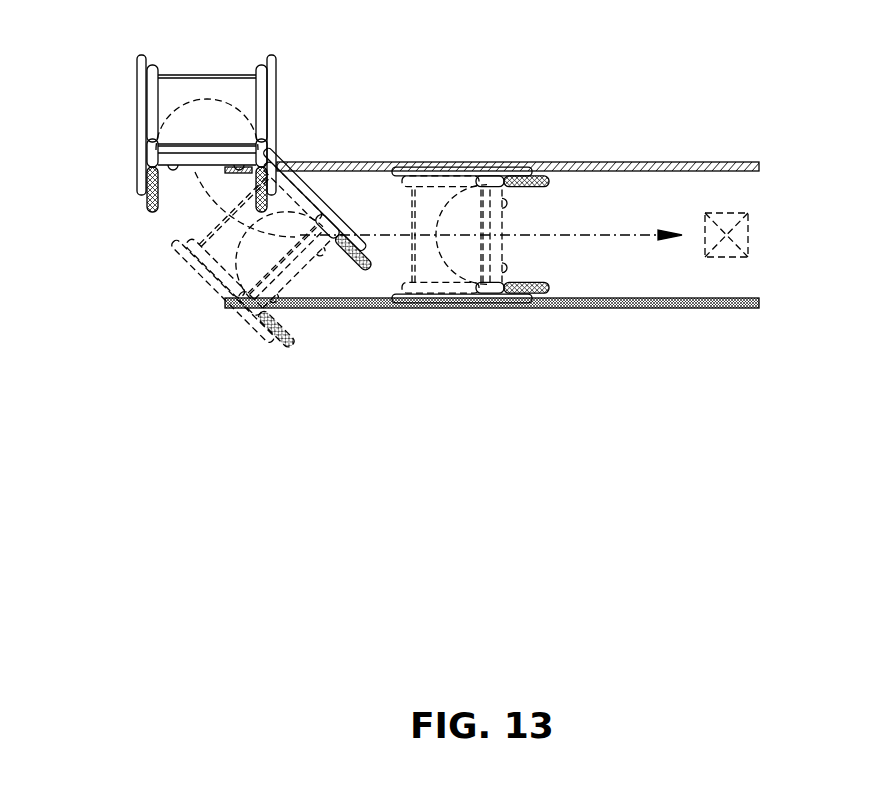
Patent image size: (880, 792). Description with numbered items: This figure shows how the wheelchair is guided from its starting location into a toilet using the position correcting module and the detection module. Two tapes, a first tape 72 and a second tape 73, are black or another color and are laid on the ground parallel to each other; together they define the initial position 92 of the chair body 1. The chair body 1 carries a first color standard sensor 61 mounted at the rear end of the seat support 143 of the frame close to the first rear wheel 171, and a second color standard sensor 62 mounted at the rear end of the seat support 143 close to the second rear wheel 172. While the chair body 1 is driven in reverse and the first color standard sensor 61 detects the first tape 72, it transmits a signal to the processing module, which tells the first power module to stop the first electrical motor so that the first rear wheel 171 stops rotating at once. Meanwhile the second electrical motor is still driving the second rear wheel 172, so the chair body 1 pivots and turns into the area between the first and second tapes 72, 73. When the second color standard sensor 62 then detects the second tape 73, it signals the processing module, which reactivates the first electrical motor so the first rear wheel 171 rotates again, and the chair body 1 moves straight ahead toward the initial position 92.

The chair body 1 is at (219, 141).
The seat support 143 is at (205, 165).
The first color standard sensor 61 is at (240, 167).
The second color standard sensor 62 is at (148, 202).
The first rear wheel 171 is at (263, 190).
The second rear wheel 172 is at (173, 168).
The first tape 72 is at (663, 162).
The second tape 73 is at (693, 308).
The initial position 92 is at (750, 237).